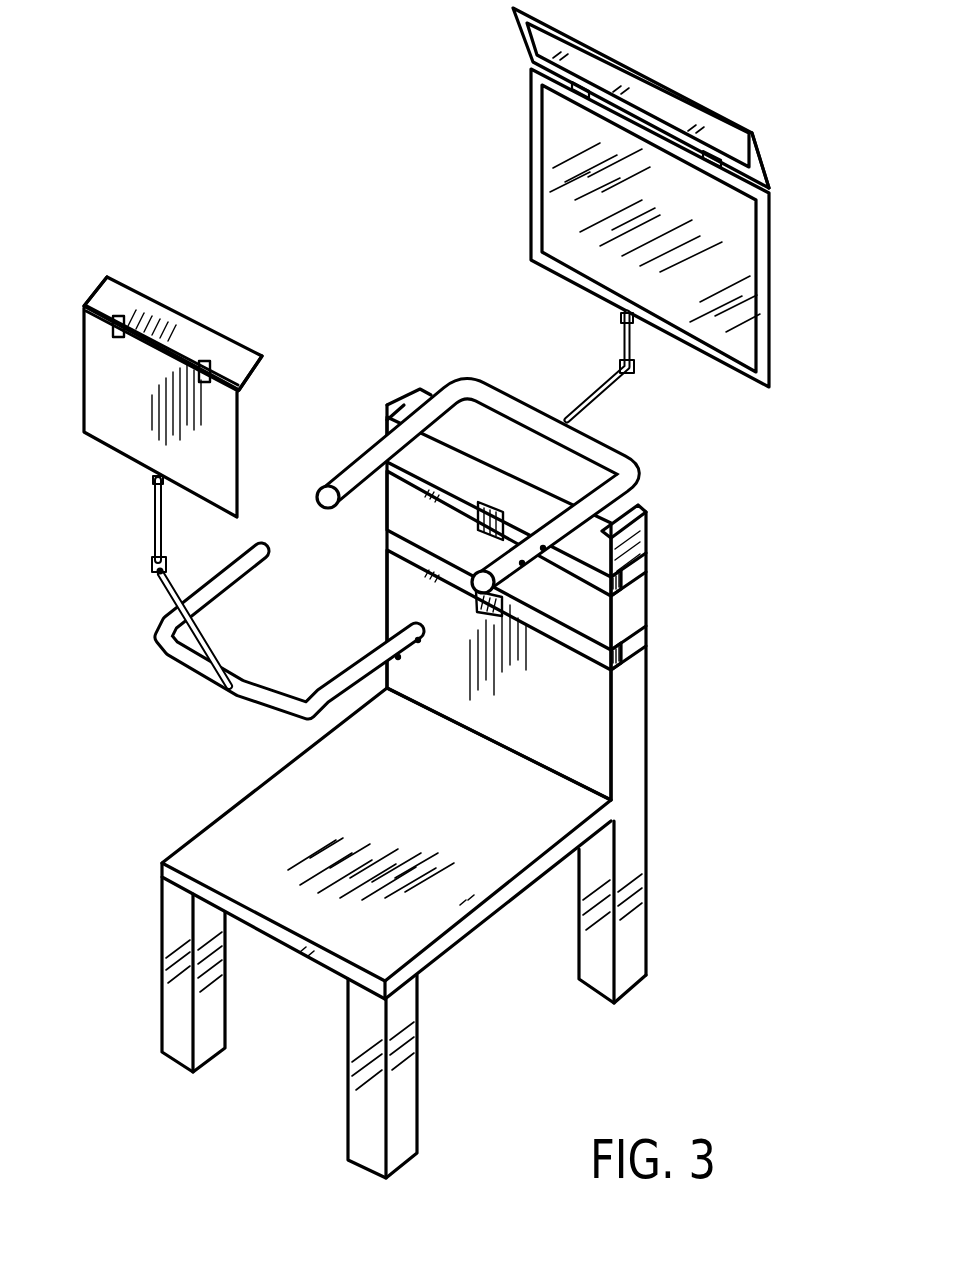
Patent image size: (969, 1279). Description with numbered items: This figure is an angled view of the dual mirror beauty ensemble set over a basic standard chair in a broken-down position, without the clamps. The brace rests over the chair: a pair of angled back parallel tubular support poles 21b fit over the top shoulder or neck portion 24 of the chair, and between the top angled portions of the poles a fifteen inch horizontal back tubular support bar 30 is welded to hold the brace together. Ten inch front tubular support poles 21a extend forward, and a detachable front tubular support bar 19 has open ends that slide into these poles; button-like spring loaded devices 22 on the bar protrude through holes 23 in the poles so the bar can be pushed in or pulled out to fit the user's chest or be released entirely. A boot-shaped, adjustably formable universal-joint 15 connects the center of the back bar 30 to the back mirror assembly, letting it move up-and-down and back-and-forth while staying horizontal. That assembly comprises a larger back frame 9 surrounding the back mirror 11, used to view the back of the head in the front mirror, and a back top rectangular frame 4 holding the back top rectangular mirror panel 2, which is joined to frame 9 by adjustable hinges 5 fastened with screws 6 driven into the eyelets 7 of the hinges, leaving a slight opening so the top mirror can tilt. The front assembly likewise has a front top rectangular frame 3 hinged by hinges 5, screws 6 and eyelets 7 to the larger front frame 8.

The back top rectangular mirror panel 2 is at (543, 43).
The front top rectangular frame 3 is at (143, 296).
The back top rectangular frame 4 is at (753, 145).
The adjustable hinges 5 is at (113, 338).
The screws 6 is at (85, 315).
The eyelets 7 is at (105, 277).
The larger front frame 8 is at (135, 353).
The larger back frame 9 is at (770, 248).
The back mirror 11 is at (552, 117).
The universal-joint 15 is at (570, 422).
The front tubular support bar 19 is at (265, 722).
The back parallel tubular support poles 21a is at (363, 455).
The back parallel tubular support poles 21b is at (647, 492).
The button-like spring loaded devices 22 is at (228, 558).
The holes 23 is at (518, 558).
The top shoulder or neck portion of the chair 24 is at (410, 392).
The horizontal back tubular support bar 30 is at (507, 393).